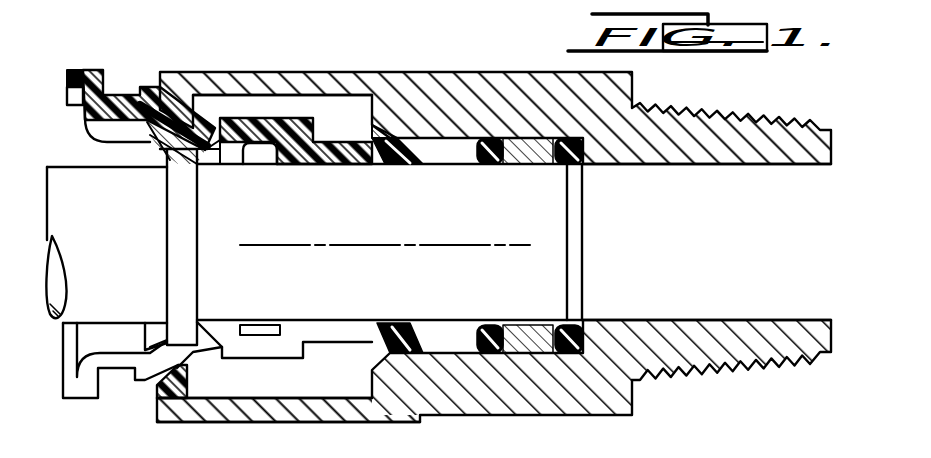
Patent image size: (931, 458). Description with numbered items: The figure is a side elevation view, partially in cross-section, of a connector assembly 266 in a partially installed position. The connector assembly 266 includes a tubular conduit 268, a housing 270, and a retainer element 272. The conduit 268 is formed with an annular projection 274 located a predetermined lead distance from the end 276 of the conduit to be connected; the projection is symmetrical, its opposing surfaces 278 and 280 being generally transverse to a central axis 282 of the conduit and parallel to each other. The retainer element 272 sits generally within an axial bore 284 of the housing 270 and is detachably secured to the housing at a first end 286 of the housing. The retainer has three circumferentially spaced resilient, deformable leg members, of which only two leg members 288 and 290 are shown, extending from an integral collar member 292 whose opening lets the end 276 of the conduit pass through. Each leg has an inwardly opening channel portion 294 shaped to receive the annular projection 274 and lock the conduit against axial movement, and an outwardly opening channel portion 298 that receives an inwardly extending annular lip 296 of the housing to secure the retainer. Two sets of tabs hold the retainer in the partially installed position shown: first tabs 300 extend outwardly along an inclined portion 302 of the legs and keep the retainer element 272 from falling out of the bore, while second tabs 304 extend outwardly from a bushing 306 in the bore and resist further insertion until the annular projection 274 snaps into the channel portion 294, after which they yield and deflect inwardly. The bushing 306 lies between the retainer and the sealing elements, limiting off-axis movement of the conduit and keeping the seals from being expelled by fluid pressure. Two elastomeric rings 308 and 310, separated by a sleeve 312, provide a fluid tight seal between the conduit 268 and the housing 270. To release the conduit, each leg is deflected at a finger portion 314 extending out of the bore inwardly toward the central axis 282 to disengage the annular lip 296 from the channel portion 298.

The connector assembly 266 is at (371, 60).
The tubular conduit 268 is at (53, 182).
The housing 270 is at (510, 89).
The retainer element 272 is at (320, 165).
The annular projection 274 is at (178, 257).
The end of the conduit 276 is at (592, 283).
The opposing surface of the projection 278 is at (162, 150).
The opposing surface of the projection 280 is at (210, 160).
The central axis 282 is at (390, 253).
The axial bore 284 is at (297, 397).
The first end of the housing 286 is at (167, 420).
The leg member 288 is at (340, 137).
The leg member 290 is at (332, 333).
The collar member 292 is at (380, 158).
The inwardly opening channel portion 294 is at (272, 152).
The annular lip 296 is at (183, 388).
The outwardly opening channel portion 298 is at (121, 103).
The first tabs 300 is at (163, 142).
The inclined portion 302 is at (162, 146).
The second tabs 304 is at (383, 137).
The bushing 306 is at (415, 140).
The elastomeric ring 308 is at (497, 168).
The elastomeric ring 310 is at (567, 168).
The sleeve 312 is at (527, 342).
The finger portion 314 is at (85, 50).